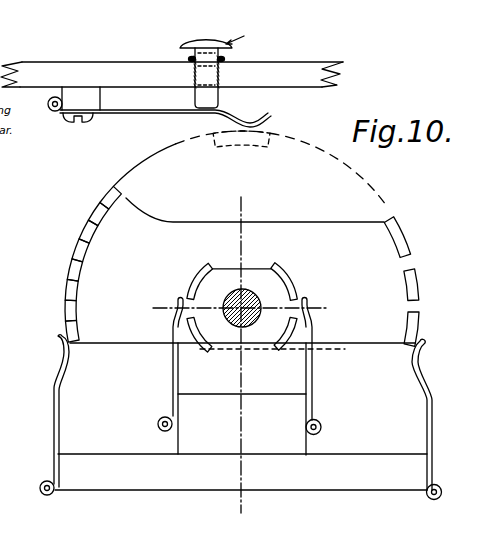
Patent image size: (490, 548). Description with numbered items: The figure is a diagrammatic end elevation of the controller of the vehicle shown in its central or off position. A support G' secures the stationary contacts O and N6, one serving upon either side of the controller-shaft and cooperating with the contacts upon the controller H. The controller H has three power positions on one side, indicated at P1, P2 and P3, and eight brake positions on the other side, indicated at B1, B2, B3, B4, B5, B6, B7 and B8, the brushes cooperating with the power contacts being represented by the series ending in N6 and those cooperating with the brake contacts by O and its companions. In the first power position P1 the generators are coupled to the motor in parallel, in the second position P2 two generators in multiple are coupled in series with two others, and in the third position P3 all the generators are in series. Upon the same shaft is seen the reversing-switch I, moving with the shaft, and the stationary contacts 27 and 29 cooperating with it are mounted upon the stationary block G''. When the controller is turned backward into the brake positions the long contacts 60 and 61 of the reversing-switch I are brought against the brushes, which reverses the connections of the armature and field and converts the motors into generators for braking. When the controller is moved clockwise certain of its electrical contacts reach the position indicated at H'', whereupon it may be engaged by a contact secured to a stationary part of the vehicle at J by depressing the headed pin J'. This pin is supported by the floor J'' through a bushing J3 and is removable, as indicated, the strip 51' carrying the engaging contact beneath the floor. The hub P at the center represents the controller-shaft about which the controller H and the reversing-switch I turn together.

The floor J'' is at (172, 74).
The headed pin J' is at (244, 70).
The bushing J3 is at (219, 70).
The strip 51' is at (159, 107).
The stationary part of the vehicle J is at (76, 127).
The position of electrical contacts H'' is at (241, 147).
The controller H is at (255, 207).
The brake position B1 is at (85, 331).
The brake position B2 is at (82, 310).
The brake position B3 is at (83, 290).
The brake position B4 is at (87, 270).
The brake position B5 is at (92, 251).
The brake position B6 is at (98, 232).
The brake position B7 is at (106, 216).
The brake position B8 is at (117, 199).
The power position P3 is at (388, 237).
The power position P2 is at (398, 285).
The power position P1 is at (398, 329).
The hub / shaft P is at (256, 295).
The reversing-switch I is at (239, 308).
The long contact 60 is at (197, 280).
The long contact 61 is at (278, 351).
The stationary block G'' is at (242, 399).
The support G' is at (241, 472).
The stationary contact 27 is at (173, 375).
The stationary contact 29 is at (312, 377).
The stationary contact O is at (56, 415).
The stationary contact N6 is at (432, 419).